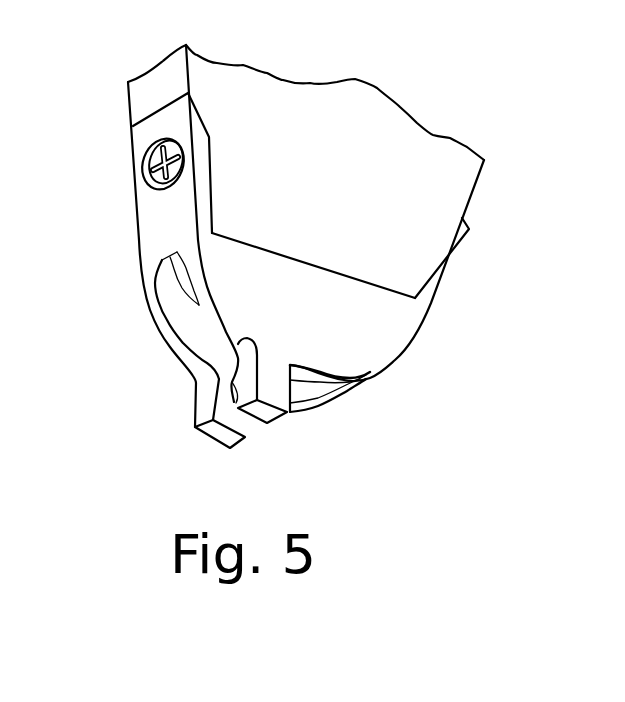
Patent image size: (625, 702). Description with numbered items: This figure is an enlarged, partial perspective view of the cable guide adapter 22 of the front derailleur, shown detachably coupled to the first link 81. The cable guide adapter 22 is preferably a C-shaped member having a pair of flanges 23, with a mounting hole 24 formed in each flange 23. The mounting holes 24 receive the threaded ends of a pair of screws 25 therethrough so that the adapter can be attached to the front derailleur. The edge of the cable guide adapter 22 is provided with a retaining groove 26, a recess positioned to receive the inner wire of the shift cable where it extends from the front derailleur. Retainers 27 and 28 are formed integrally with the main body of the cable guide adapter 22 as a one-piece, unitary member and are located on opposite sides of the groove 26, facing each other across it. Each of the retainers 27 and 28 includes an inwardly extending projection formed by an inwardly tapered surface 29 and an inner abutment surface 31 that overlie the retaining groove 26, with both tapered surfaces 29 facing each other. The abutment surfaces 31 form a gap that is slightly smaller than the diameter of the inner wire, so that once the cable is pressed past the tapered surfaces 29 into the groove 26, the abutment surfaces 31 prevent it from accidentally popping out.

The cable guide adapter 22 is at (440, 307).
The flange 23 is at (211, 167).
The mounting hole 24 is at (162, 190).
The screw 25 is at (183, 150).
The retaining groove 26 is at (170, 274).
The retainer 27 is at (195, 427).
The retainer 28 is at (280, 418).
The inwardly tapered surface 29 is at (237, 382).
The inner abutment surface 31 is at (193, 378).
The first link 81 is at (440, 185).